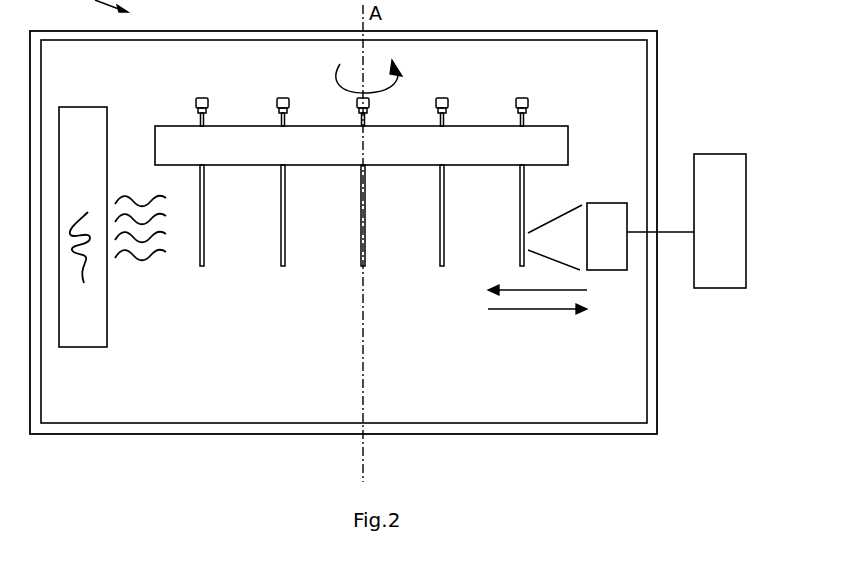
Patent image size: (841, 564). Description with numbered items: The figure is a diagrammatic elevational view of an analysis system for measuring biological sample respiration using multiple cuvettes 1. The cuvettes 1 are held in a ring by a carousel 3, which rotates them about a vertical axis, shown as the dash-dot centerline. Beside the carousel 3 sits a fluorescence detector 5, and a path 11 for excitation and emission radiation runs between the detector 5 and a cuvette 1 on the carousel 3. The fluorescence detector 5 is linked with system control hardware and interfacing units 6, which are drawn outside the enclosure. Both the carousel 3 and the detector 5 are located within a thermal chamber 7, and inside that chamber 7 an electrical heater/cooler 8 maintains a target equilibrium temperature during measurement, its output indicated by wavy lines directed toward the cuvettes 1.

The cuvette 1 is at (165, 100).
The carousel 3 is at (542, 126).
The fluorescence detector 5 is at (610, 203).
The system control hardware and interfacing units 6 is at (756, 176).
The thermal chamber 7 is at (657, 391).
The electrical heater/cooler 8 is at (69, 349).
The path for excitation and emission radiation 11 is at (554, 249).